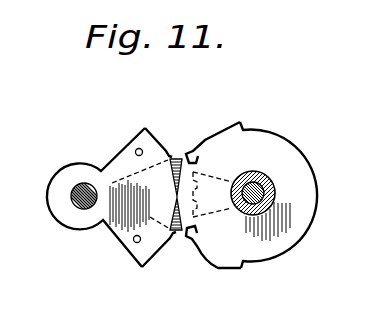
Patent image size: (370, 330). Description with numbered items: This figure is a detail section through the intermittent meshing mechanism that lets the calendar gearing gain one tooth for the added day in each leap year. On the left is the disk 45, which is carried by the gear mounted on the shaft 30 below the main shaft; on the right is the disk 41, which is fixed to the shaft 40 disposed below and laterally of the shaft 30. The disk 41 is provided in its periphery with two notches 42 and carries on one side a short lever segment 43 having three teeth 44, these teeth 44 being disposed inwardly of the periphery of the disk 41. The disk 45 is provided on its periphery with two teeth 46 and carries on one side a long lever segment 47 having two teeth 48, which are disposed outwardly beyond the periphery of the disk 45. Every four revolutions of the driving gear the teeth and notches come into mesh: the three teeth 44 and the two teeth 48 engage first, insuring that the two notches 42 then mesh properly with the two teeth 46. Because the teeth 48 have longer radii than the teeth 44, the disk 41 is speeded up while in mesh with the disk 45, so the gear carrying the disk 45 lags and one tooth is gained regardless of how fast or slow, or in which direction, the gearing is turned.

The shaft 30 is at (77, 205).
The shaft 40 is at (265, 187).
The disk 41 is at (272, 140).
The notches 42 is at (204, 138).
The short lever segment 43 is at (212, 188).
The teeth 44 is at (198, 217).
The disk 45 is at (118, 157).
The teeth 46 is at (173, 148).
The long lever segment 47 is at (178, 236).
The teeth 48 is at (170, 191).